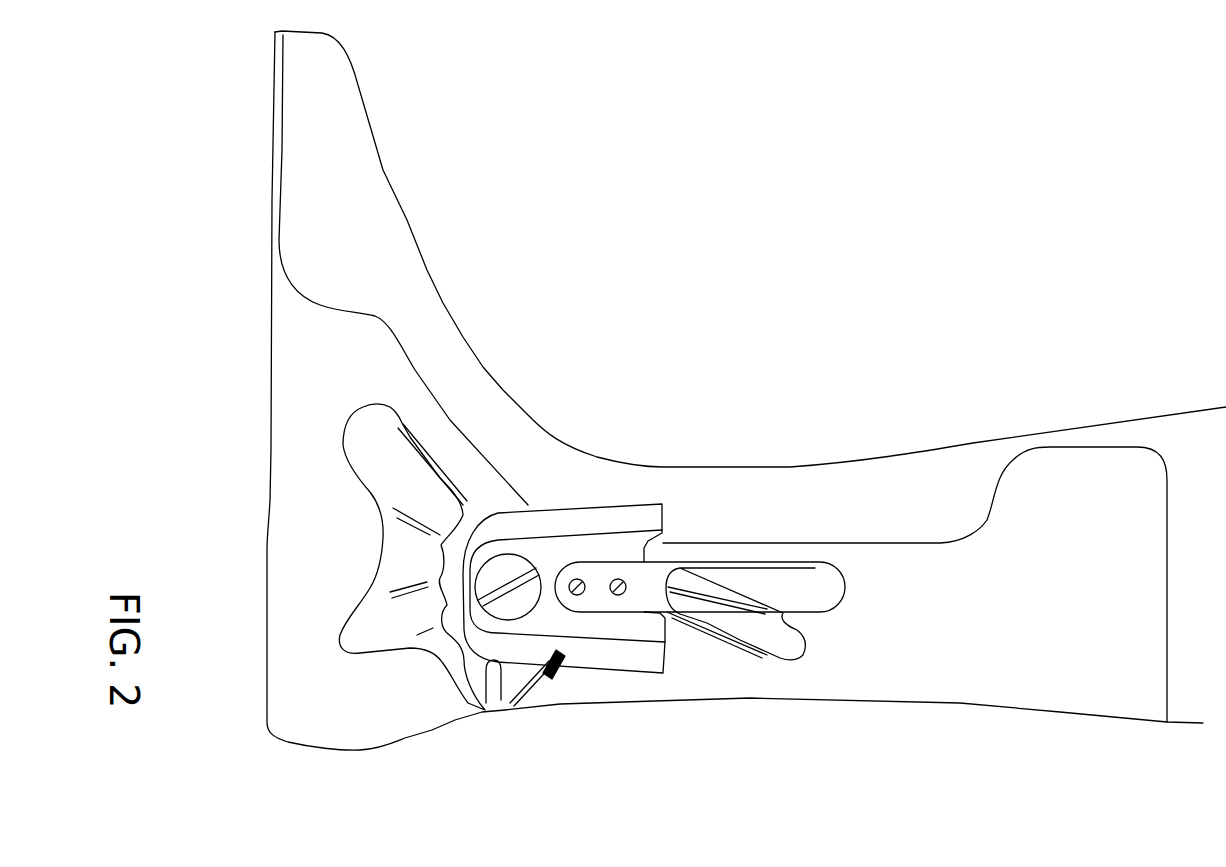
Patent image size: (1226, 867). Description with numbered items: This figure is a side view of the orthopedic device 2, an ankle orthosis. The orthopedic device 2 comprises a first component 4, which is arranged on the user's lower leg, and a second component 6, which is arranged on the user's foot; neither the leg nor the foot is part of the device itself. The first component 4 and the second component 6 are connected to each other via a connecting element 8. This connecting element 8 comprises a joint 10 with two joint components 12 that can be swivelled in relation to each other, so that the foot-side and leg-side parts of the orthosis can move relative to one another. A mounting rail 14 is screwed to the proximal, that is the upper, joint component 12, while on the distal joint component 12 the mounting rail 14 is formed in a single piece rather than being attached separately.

The orthopedic device 2 is at (480, 707).
The first component 4 is at (933, 670).
The second component 6 is at (310, 437).
The connecting element 8 is at (630, 700).
The joint 10 is at (561, 671).
The joint component 12 is at (773, 640).
The mounting rail 14 is at (403, 568).